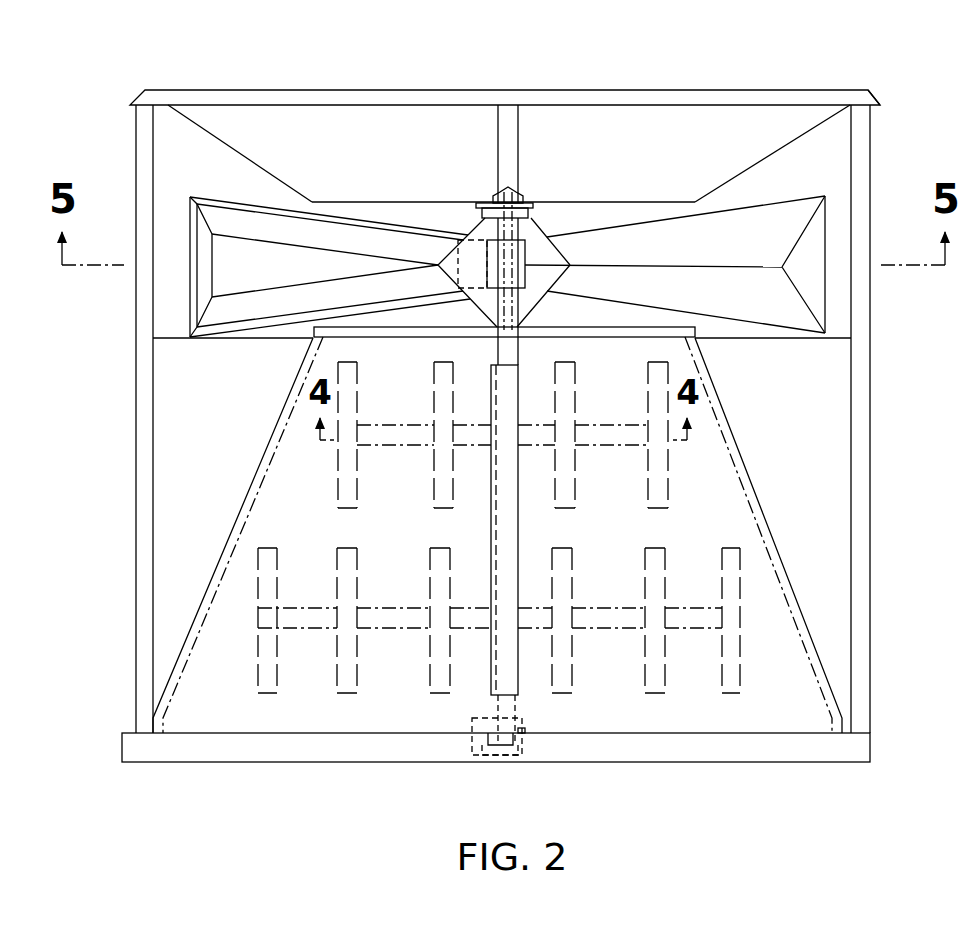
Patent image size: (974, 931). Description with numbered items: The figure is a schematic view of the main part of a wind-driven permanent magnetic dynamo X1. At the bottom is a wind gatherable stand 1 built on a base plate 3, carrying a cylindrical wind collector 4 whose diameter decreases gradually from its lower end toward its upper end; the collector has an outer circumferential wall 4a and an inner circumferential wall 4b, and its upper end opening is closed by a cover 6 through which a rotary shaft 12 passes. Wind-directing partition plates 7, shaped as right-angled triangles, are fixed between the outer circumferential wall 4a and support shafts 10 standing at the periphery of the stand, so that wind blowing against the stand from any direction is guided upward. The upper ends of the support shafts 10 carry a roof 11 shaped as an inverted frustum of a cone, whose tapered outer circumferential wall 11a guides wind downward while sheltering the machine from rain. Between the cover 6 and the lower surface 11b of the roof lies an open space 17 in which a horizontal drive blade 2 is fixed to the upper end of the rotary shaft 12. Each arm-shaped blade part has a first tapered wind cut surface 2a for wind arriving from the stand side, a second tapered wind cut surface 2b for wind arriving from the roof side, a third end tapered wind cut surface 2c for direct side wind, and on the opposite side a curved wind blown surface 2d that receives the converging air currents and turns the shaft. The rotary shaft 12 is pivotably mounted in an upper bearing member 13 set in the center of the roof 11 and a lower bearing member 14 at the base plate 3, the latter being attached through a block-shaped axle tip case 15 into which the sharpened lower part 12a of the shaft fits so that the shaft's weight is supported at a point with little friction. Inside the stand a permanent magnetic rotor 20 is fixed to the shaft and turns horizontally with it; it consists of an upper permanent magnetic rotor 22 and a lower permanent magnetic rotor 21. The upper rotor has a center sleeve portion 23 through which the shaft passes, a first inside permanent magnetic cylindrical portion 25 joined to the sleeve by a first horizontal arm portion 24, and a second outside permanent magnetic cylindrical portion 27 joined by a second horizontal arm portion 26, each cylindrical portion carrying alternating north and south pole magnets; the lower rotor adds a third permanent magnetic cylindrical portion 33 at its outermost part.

The permanent magnetic dynamo X1 is at (874, 86).
The wind gatherable stand 1 is at (784, 504).
The horizontal drive blade 2 is at (553, 247).
The first tapered wind cut surface 2a is at (773, 312).
The second tapered wind cut surface 2b is at (760, 218).
The third end tapered wind cut surface 2c is at (812, 290).
The wind blown surface 2d is at (282, 250).
The base plate 3 is at (866, 746).
The cylindrical wind collector 4 is at (497, 530).
The outer circumferential wall 4a is at (808, 626).
The inner circumferential wall 4b is at (218, 598).
The cover 6 is at (615, 328).
The wind-directing partition plates 7 is at (165, 410).
The support shafts 10 is at (141, 597).
The roof 11 is at (752, 98).
The tapered outer circumferential wall 11a is at (248, 157).
The lower surface 11b is at (416, 205).
The rotary shaft 12 is at (520, 353).
The sharpened lower part 12a is at (520, 770).
The upper bearing member 13 is at (522, 212).
The lower bearing member 14 is at (472, 730).
The axle tip case 15 is at (482, 763).
The open space 17 is at (583, 212).
The permanent magnetic rotor 20 is at (517, 488).
The lower permanent magnetic rotor 21 is at (517, 574).
The upper permanent magnetic rotor 22 is at (490, 487).
The center sleeve portion 23 is at (513, 645).
The first horizontal arm portion 24 is at (462, 440).
The first inside permanent magnetic cylindrical portion 25 is at (432, 410).
The second horizontal arm portion 26 is at (408, 455).
The second outside permanent magnetic cylindrical portion 27 is at (340, 456).
The third permanent magnetic cylindrical portion 33 is at (258, 637).